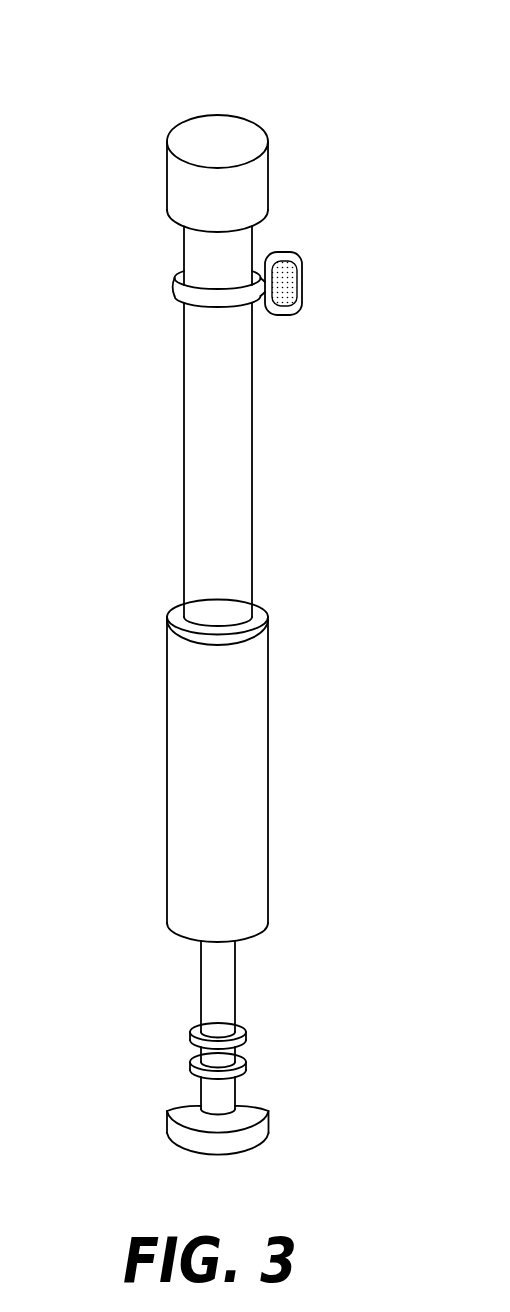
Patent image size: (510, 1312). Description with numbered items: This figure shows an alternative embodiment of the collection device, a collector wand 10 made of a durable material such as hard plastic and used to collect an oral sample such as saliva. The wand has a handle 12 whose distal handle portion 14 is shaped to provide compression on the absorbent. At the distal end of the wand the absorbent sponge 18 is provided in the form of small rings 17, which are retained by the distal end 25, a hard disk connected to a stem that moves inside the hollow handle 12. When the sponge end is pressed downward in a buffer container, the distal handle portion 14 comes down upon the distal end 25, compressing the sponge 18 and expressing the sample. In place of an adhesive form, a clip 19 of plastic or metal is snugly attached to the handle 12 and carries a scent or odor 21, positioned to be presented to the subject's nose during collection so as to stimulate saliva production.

The collector wand 10 is at (216, 88).
The handle 12 is at (252, 452).
The distal handle portion 14 is at (268, 732).
The small rings 17 is at (248, 1033).
The sponge 18 is at (152, 1017).
The clip 19 is at (302, 282).
The scent or odor 21 is at (288, 264).
The distal end 25 is at (269, 1120).